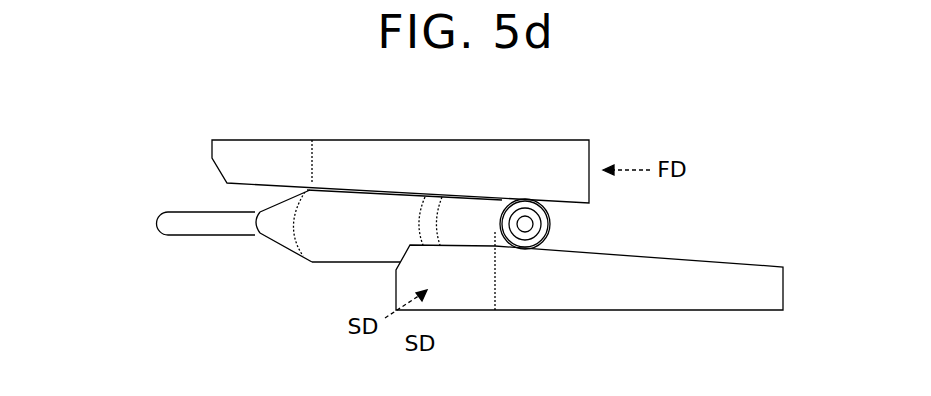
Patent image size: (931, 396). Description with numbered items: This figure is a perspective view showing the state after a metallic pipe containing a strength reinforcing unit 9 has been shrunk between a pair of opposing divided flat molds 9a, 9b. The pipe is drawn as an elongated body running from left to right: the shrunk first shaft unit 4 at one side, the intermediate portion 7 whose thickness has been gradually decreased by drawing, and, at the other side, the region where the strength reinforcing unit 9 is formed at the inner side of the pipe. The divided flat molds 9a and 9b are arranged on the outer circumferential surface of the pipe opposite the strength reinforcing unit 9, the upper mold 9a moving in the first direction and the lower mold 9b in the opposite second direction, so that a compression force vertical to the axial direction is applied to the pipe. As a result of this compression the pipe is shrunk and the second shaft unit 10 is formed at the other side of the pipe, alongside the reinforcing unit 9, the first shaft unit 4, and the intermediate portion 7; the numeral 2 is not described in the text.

The optical fiber 2 is at (165, 237).
The first shaft unit 4 is at (228, 233).
The intermediate portion 7 is at (325, 247).
The strength reinforcing unit 9 is at (536, 224).
The divided flat mold 9a is at (581, 142).
The divided flat mold 9b is at (745, 305).
The second shaft unit 10 is at (487, 232).